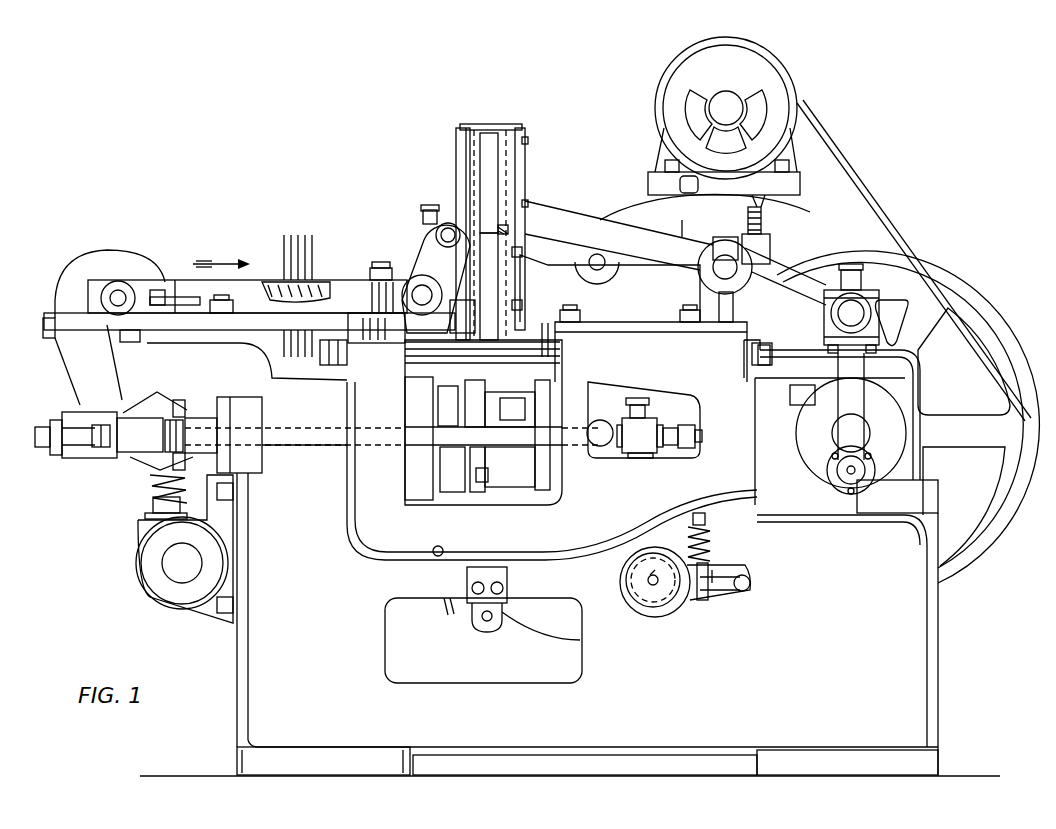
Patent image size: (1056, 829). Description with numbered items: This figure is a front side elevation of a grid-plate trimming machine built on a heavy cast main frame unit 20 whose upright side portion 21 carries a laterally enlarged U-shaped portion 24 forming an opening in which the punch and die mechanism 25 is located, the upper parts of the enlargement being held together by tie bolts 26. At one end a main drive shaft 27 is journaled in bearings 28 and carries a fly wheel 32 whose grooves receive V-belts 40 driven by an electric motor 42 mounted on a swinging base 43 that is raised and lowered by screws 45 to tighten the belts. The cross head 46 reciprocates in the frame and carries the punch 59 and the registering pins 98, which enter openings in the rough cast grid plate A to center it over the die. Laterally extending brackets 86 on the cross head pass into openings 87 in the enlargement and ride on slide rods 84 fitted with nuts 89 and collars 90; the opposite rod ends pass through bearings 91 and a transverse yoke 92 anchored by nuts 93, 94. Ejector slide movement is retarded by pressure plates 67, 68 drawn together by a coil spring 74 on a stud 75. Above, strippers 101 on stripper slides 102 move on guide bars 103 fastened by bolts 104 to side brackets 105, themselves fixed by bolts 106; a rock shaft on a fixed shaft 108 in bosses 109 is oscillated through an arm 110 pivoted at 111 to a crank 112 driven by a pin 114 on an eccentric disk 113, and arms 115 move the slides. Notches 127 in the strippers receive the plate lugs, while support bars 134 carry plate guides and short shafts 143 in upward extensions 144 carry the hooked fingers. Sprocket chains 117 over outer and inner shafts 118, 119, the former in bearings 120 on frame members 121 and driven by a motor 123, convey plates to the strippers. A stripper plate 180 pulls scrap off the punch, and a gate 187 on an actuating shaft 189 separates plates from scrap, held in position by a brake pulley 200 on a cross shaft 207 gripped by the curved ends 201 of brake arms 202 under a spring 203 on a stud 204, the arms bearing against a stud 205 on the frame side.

The main or base frame unit 20 is at (948, 630).
The frame side portion 21 is at (502, 630).
The U-shaped portion 24 is at (350, 516).
The punch and die mechanism 25 is at (540, 384).
The tie bolts 26 is at (768, 352).
The main drive shaft 27 is at (866, 432).
The bearings 28 is at (815, 385).
The fly wheel 32 is at (975, 320).
The V-belts 40 is at (872, 212).
The electric motor 42 is at (775, 80).
The swinging base 43 is at (605, 217).
The screws 45 is at (768, 222).
The cross head 46 is at (612, 405).
The punch 59 is at (487, 466).
The upper pressure plate 67 is at (203, 403).
The lower pressure plate 68 is at (112, 455).
The expansion coil spring 74 is at (152, 482).
The stud 75 is at (165, 535).
The slide rods 84 is at (310, 442).
The brackets 86 is at (640, 452).
The openings 87 is at (665, 425).
The nuts 89 is at (692, 440).
The collars 90 is at (680, 428).
The bearings 91 is at (220, 412).
The transverse yoke 92 is at (86, 418).
The nut 93 is at (175, 405).
The nut 94 is at (98, 452).
The registering pins 98 is at (493, 390).
The strippers or stripper bars 101 is at (457, 158).
The stripper slides 102 is at (515, 128).
The guide bars 103 is at (488, 133).
The bolts 104 is at (518, 300).
The side brackets 105 is at (606, 284).
The bolts 106 is at (688, 316).
The fixed shaft 108 is at (720, 270).
The apertured bosses 109 is at (765, 265).
The arm 110 is at (797, 273).
The pivotal connection 111 is at (864, 300).
The crank 112 is at (842, 410).
The eccentric disk 113 is at (808, 434).
The pin 114 is at (838, 468).
The arms 115 is at (638, 238).
The sprocket chains 117 is at (318, 282).
The outer sprocket shaft 118 is at (120, 296).
The inner sprocket shaft 119 is at (422, 290).
The bearings 120 is at (110, 288).
The frame members 121 is at (108, 325).
The motor 123 is at (160, 585).
The notches 127 is at (495, 247).
The support bars 134 is at (497, 243).
The short shafts 143 is at (448, 223).
The upward extensions 144 is at (433, 238).
The stripper plate or frame 180 is at (425, 493).
The gate 187 is at (452, 616).
The actuating shaft 189 is at (443, 548).
The brake pulley 200 is at (680, 598).
The curved ends 201 is at (620, 595).
The brake arms 202 is at (725, 566).
The spring 203 is at (712, 535).
The stud 204 is at (708, 585).
The stud 205 is at (752, 582).
The cross shaft 207 is at (653, 590).
The grid panel or plate A is at (305, 236).